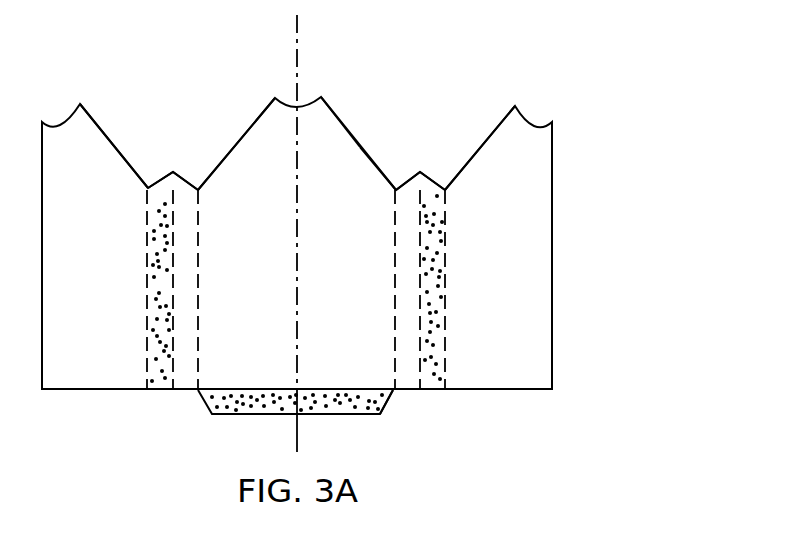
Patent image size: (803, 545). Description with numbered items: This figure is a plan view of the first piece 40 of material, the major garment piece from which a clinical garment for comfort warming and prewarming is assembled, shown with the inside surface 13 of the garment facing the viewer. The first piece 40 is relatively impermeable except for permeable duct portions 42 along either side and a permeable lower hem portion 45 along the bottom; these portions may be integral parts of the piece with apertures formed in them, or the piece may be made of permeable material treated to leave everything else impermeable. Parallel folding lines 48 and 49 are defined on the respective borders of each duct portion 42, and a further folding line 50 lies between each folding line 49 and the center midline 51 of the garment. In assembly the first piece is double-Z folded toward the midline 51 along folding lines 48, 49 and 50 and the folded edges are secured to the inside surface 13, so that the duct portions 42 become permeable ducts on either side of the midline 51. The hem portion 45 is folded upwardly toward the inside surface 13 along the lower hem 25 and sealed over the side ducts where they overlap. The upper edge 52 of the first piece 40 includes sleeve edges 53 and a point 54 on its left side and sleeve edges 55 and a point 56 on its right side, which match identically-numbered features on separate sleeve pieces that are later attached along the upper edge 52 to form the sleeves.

The inside surface 13 is at (338, 222).
The lower hem 25 is at (335, 390).
The first piece 40 is at (590, 243).
The permeable duct portions 42 is at (158, 255).
The permeable lower hem portion 45 is at (383, 403).
The folding line 48 is at (150, 349).
The folding line 49 is at (173, 348).
The folding line 50 is at (198, 310).
The center midline 51 is at (298, 67).
The upper edge 52 is at (328, 105).
The sleeve edges 53 is at (88, 112).
The point 54 is at (190, 177).
The sleeve edges 55 is at (360, 147).
The point 56 is at (403, 184).